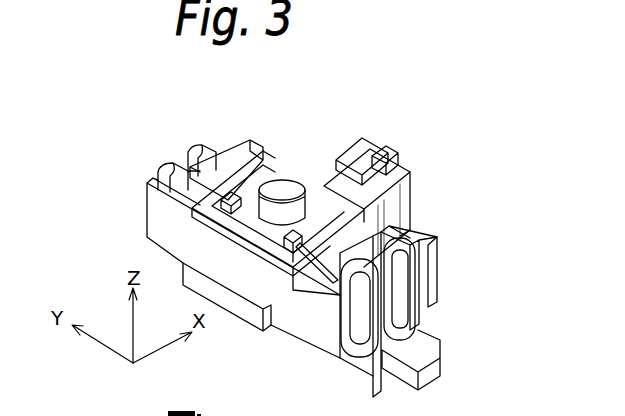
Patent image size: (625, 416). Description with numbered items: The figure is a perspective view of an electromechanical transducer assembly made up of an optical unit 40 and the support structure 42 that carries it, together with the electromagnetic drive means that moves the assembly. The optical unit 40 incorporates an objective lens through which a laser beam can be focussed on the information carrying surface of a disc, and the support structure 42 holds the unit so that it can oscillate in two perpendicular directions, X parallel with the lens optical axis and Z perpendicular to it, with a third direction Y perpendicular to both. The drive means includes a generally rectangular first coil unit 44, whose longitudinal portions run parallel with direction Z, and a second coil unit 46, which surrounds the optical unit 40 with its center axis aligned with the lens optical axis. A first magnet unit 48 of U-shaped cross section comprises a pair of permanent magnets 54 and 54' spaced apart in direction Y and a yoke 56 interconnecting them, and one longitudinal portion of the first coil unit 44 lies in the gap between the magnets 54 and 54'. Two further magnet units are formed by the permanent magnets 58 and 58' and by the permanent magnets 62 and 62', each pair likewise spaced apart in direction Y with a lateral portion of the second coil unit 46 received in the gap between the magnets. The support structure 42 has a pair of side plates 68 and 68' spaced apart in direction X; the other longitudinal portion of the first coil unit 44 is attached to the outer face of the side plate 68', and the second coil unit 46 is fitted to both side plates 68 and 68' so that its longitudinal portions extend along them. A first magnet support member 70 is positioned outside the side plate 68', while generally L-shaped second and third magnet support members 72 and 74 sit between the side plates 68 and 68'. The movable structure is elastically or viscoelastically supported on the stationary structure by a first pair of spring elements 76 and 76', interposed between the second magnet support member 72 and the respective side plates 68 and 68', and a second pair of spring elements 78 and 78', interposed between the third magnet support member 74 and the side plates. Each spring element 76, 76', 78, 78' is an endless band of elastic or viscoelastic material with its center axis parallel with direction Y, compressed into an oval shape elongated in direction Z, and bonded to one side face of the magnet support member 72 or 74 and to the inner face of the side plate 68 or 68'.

The optical unit 40 is at (292, 174).
The support structure 42 is at (118, 231).
The first coil unit 44 is at (328, 172).
The second coil unit 46 is at (218, 248).
The first magnet unit 48 is at (422, 177).
The permanent magnet 54 is at (378, 141).
The permanent magnet 54' is at (434, 210).
The yoke 56 is at (396, 157).
The permanent magnet 58 is at (226, 136).
The permanent magnet 58' is at (257, 164).
The permanent magnet 62 is at (295, 272).
The permanent magnet 62' is at (316, 300).
The side plate 68 is at (327, 314).
The side plate 68' is at (437, 278).
The first magnet support member 70 is at (439, 278).
The second magnet support member 72 is at (233, 312).
The third magnet support member 74 is at (383, 397).
The spring element 76 is at (150, 170).
The spring element 76' is at (201, 135).
The spring element 78 is at (351, 337).
The spring element 78' is at (435, 304).